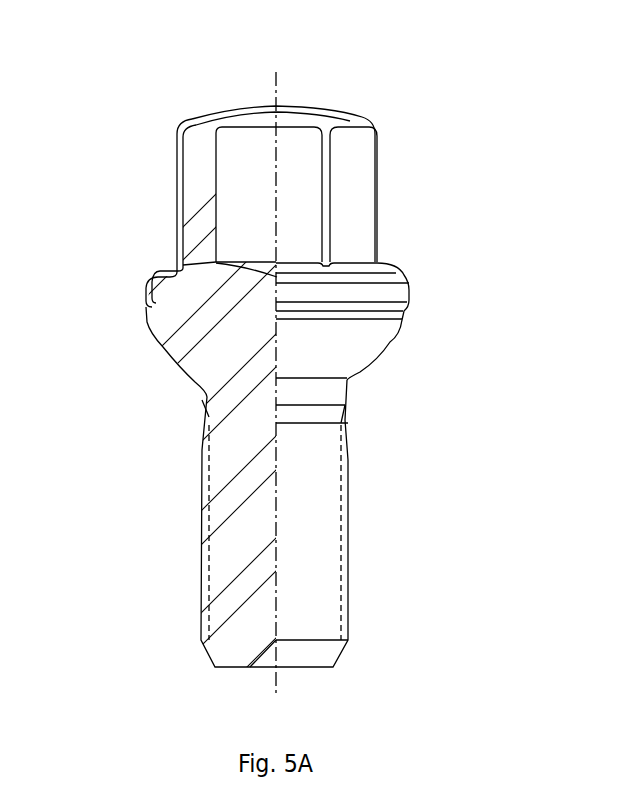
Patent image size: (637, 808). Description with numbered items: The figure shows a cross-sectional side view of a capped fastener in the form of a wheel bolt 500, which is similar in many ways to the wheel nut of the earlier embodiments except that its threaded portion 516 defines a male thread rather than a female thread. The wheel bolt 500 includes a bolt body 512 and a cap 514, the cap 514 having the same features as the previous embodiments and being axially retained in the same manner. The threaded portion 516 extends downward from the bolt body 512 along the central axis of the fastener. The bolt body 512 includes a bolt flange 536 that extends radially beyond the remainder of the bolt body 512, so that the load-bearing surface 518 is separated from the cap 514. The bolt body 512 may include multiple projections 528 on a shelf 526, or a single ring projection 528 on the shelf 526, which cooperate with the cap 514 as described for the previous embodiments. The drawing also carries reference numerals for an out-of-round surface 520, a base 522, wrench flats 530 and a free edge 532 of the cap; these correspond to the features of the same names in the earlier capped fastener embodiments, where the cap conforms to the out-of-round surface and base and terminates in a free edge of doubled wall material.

The wheel bolt 500 is at (128, 78).
The bolt body 512 is at (247, 283).
The cap 514 is at (245, 108).
The threaded portion 516 is at (340, 547).
The load-bearing surface 518 is at (377, 362).
The cap 520 is at (190, 172).
The flange body 522 is at (198, 293).
The shelf 526 is at (170, 268).
The projection 528 is at (153, 272).
The hex head 530 is at (360, 193).
The cap lip edge 532 is at (142, 283).
The bolt flange 536 is at (410, 321).